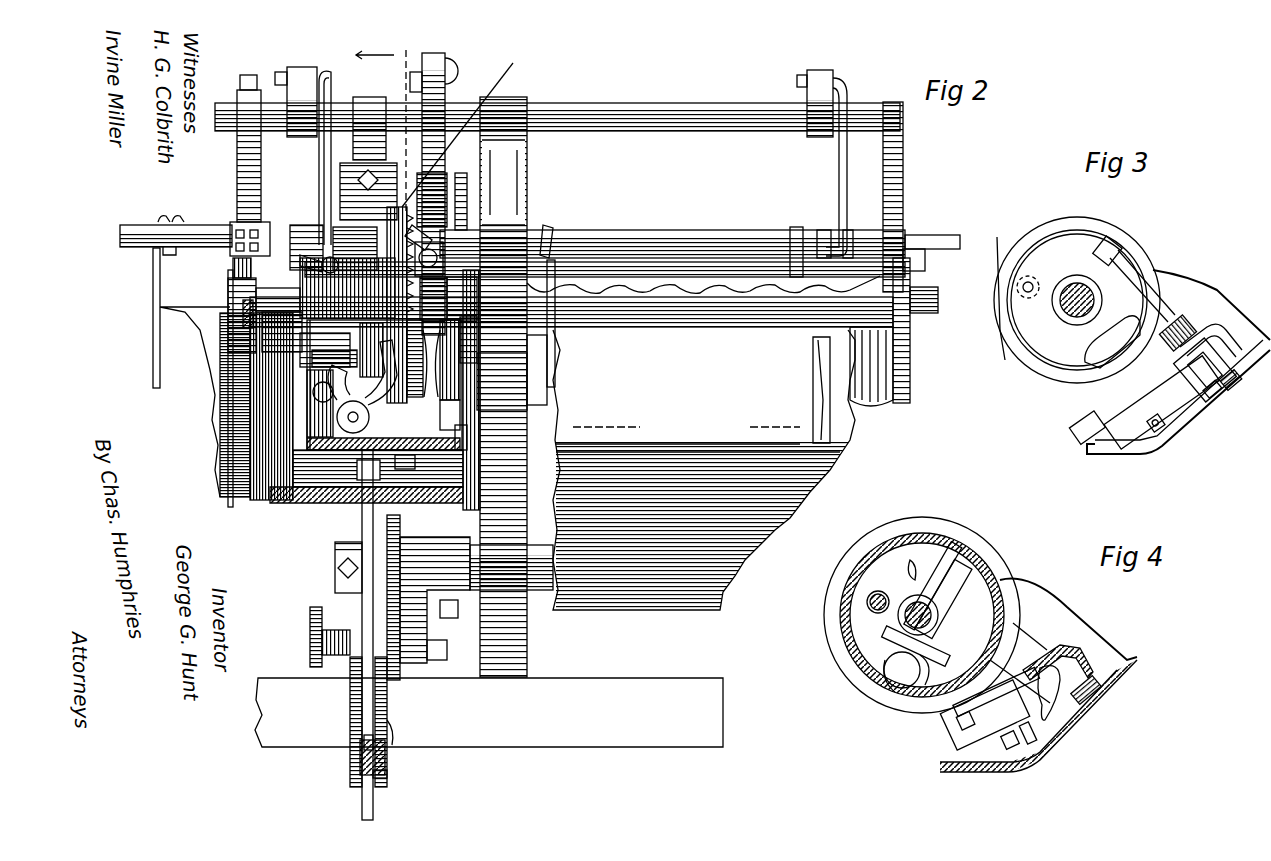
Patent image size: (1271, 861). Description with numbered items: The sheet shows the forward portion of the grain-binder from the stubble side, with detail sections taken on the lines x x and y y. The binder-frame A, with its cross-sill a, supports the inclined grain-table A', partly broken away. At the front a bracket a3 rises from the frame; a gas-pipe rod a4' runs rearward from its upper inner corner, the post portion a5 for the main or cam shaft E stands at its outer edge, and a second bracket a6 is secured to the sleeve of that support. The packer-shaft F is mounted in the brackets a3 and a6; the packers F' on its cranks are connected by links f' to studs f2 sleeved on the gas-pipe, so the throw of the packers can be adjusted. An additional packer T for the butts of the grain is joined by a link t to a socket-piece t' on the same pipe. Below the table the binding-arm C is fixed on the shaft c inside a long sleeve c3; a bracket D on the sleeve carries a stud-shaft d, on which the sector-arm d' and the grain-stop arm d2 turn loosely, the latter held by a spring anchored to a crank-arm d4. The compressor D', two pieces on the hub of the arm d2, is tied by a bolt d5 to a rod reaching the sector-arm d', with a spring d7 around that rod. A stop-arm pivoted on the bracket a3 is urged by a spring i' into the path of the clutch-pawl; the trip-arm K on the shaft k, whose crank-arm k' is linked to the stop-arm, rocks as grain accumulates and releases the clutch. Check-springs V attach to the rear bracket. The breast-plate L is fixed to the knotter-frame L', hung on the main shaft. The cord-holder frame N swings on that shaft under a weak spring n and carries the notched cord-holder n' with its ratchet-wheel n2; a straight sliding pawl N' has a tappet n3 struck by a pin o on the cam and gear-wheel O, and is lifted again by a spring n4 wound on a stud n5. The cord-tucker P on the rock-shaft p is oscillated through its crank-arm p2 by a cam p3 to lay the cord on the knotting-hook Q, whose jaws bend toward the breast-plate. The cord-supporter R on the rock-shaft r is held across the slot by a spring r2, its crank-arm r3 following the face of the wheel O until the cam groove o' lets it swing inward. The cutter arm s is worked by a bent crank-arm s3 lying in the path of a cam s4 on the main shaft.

In FIG. 2, the rod (gas-pipe) a4' is at (557, 105).
In FIG. 2, the crank-arm p2 is at (262, 230).
In FIG. 2, the studs f2 is at (300, 67).
In FIG. 2, the links f' is at (401, 139).
In FIG. 2, the spring i' is at (378, 172).
In FIG. 2, the section line y y is at (404, 465).
In FIG. 2, the packers F' is at (319, 236).
In FIG. 2, the section line x x is at (473, 170).
In FIG. 2, the cam and gear-wheel O is at (490, 120).
In FIG. 3, the cam and gear-wheel O is at (1038, 223).
In FIG. 4, the cam and gear-wheel O is at (840, 583).
In FIG. 2, the second bracket a6 is at (515, 182).
In FIG. 2, the bracket a3 is at (896, 180).
In FIG. 2, the socket-piece t' is at (815, 91).
In FIG. 2, the link t is at (829, 167).
In FIG. 2, the packer-shaft F is at (605, 240).
In FIG. 2, the crank-arm k' is at (931, 235).
In FIG. 2, the rock-shaft r is at (548, 232).
In FIG. 3, the rock-shaft r is at (1213, 395).
In FIG. 2, the shaft k is at (571, 303).
In FIG. 2, the binder-frame A is at (704, 470).
In FIG. 2, the grain-table A' is at (502, 460).
In FIG. 2, the additional packer T is at (815, 372).
In FIG. 2, the check-springs V is at (556, 356).
In FIG. 2, the trip-arm K is at (545, 383).
In FIG. 2, the main or cam shaft E is at (938, 300).
In FIG. 3, the main or cam shaft E is at (1060, 310).
In FIG. 4, the main or cam shaft E is at (898, 616).
In FIG. 2, the post portion a5 is at (895, 363).
In FIG. 2, the spring n is at (172, 248).
In FIG. 2, the bent crank-arm s3 is at (297, 267).
In FIG. 2, the cam s4 is at (243, 310).
In FIG. 2, the arm s is at (307, 383).
In FIG. 2, the rock-shaft p is at (328, 258).
In FIG. 2, the cam p3 is at (290, 327).
In FIG. 2, the cord tucker or placer P is at (307, 347).
In FIG. 2, the cord-holder n' is at (240, 406).
In FIG. 4, the cord-holder n' is at (1048, 744).
In FIG. 2, the straight pawl N' is at (366, 352).
In FIG. 3, the straight pawl N' is at (1135, 404).
In FIG. 4, the straight pawl N' is at (966, 625).
In FIG. 2, the crank-arm r3 is at (440, 266).
In FIG. 3, the crank-arm r3 is at (1127, 279).
In FIG. 2, the spring r2 is at (473, 332).
In FIG. 3, the spring r2 is at (1180, 322).
In FIG. 2, the breast-plate L is at (475, 390).
In FIG. 3, the breast-plate L is at (1178, 402).
In FIG. 4, the breast-plate L is at (1038, 728).
In FIG. 2, the spring n4 is at (460, 408).
In FIG. 4, the spring n4 is at (890, 650).
In FIG. 2, the cord-holder frame N is at (478, 478).
In FIG. 4, the cord-holder frame N is at (953, 710).
In FIG. 2, the ratchet-wheel n2 is at (353, 427).
In FIG. 4, the ratchet-wheel n2 is at (1010, 748).
In FIG. 2, the binding-arm C is at (362, 800).
In FIG. 2, the arm d2 is at (347, 552).
In FIG. 2, the shaft c is at (400, 518).
In FIG. 2, the bracket D is at (435, 600).
In FIG. 2, the stud-shaft d is at (442, 634).
In FIG. 2, the sleeve c3 is at (511, 567).
In FIG. 2, the crank-arm d4 is at (310, 615).
In FIG. 2, the cross-sill a is at (489, 712).
In FIG. 2, the compressor D' is at (378, 722).
In FIG. 2, the bolt d5 is at (364, 745).
In FIG. 2, the arm d' is at (418, 745).
In FIG. 2, the spring d7 is at (386, 776).
In FIG. 3, the knotter-frame L' is at (1182, 355).
In FIG. 4, the knotter-frame L' is at (1068, 619).
In FIG. 3, the pin o is at (1028, 275).
In FIG. 4, the pin o is at (878, 593).
In FIG. 3, the cam groove o' is at (1105, 342).
In FIG. 3, the cord-supporter R is at (1232, 388).
In FIG. 4, the cord-supporter R is at (1100, 690).
In FIG. 4, the stud n5 is at (898, 672).
In FIG. 4, the tappet n3 is at (975, 595).
In FIG. 4, the knotting-hook Q is at (1062, 705).